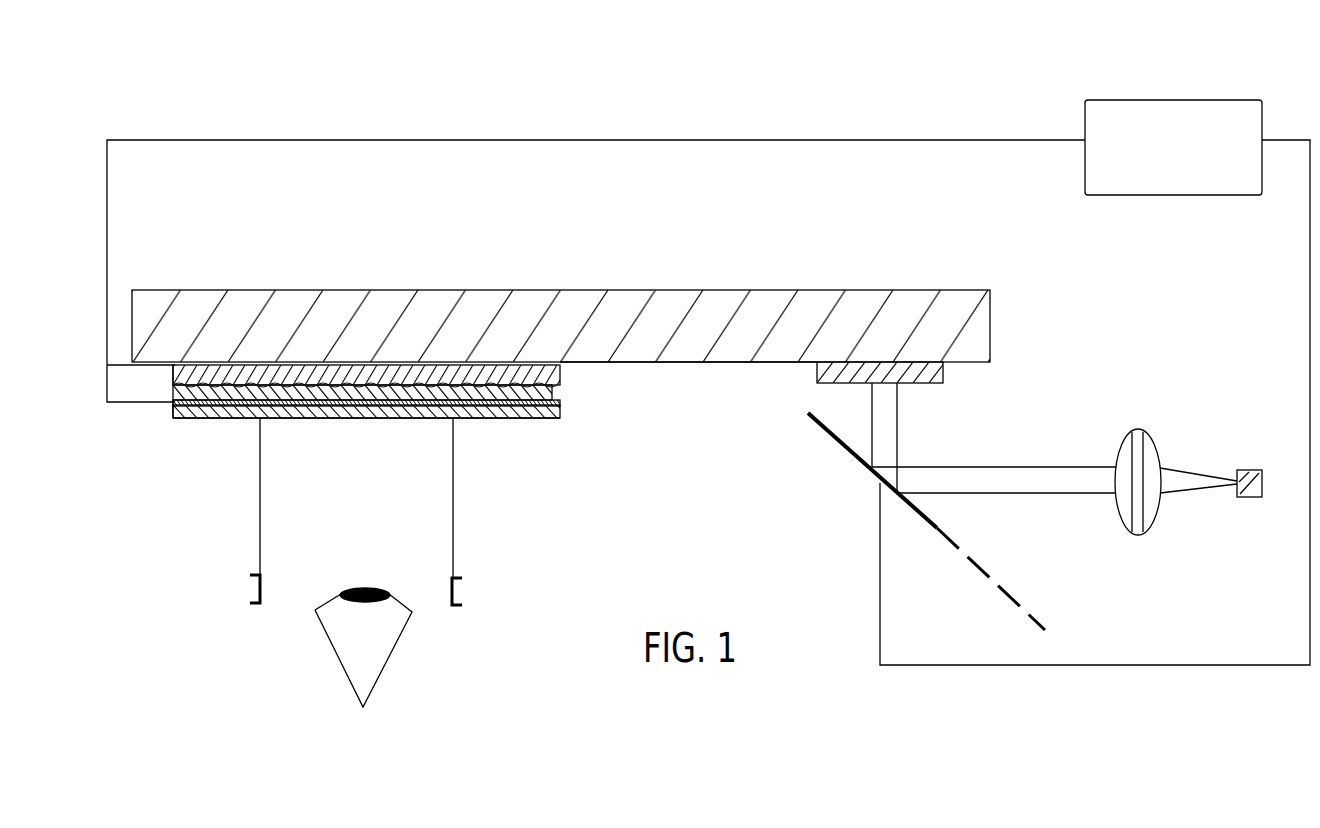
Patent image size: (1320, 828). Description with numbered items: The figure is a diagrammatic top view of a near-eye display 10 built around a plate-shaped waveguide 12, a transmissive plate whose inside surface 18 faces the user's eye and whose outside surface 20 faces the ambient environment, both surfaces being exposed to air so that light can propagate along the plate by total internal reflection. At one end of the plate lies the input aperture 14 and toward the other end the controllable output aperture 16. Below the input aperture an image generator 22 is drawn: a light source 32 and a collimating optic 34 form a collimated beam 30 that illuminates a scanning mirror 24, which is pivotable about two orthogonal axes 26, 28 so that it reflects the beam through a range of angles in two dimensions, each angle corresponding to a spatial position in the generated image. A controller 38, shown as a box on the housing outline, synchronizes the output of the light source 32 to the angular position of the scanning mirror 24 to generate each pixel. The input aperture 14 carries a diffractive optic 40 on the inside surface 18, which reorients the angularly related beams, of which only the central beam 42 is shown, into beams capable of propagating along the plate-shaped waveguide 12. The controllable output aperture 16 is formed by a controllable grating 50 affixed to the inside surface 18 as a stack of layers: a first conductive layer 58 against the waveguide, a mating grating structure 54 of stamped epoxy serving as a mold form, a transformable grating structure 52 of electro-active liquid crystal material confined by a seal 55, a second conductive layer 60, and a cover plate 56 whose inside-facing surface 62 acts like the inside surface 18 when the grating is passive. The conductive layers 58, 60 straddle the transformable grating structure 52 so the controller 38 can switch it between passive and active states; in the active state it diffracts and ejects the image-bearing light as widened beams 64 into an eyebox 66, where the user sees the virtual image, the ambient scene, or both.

The near-eye display 10 is at (568, 121).
The plate-shaped waveguide 12 is at (606, 293).
The input aperture 14 is at (899, 395).
The controllable output aperture 16 is at (478, 422).
The inside surface 18 is at (762, 362).
The outside surface 20 is at (693, 290).
The image generator 22 is at (1036, 501).
The scanning mirror 24 is at (849, 454).
The first orthogonal axis 26 is at (874, 482).
The second orthogonal axis 28 is at (1018, 600).
The collimated beam 30 is at (1068, 467).
The light source 32 is at (1252, 497).
The collimating optic 34 is at (1152, 451).
The controller 38 is at (1168, 167).
The diffractive optic 40 is at (943, 380).
The central beam 42 is at (902, 420).
The controllable grating 50 is at (107, 400).
The transformable grating structure 52 is at (503, 404).
The mating grating structure 54 is at (563, 371).
The seal 55 is at (562, 392).
The cover plate 56 is at (560, 406).
The first conductive layer 58 is at (410, 364).
The second conductive layer 60 is at (169, 377).
The inside-facing surface 62 is at (222, 420).
The beam 64 is at (461, 525).
The eyebox 66 is at (444, 597).